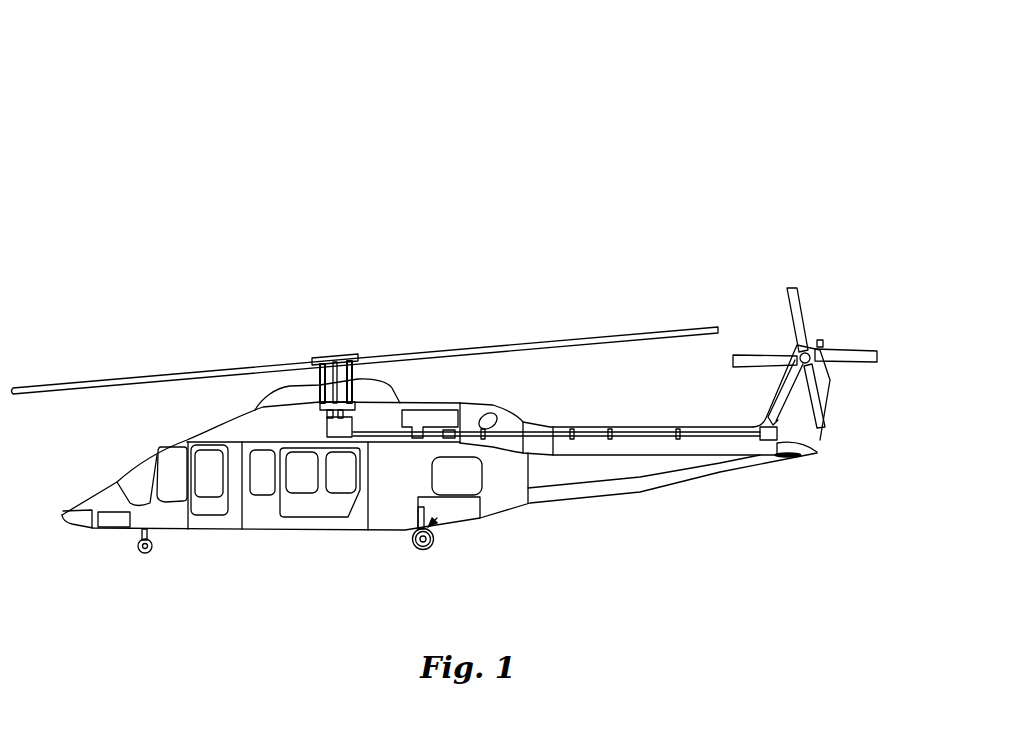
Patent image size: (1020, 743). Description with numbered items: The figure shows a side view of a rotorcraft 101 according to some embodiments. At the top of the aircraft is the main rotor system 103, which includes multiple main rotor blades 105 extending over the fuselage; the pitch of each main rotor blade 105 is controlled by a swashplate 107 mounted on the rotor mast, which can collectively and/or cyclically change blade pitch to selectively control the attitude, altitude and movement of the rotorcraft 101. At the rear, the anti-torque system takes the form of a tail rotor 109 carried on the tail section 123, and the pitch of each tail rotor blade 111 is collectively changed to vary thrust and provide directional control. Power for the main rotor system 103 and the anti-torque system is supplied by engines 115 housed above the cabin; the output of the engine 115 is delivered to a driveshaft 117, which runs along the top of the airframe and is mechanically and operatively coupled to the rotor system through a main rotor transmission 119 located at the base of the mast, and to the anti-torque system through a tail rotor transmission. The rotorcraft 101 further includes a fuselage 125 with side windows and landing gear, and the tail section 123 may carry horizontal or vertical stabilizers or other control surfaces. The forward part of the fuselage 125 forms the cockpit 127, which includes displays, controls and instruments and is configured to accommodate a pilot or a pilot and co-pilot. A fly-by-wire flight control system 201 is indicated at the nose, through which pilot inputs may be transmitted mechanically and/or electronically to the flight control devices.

The rotorcraft 101 is at (238, 97).
The main rotor system 103 is at (351, 337).
The main rotor blades 105 is at (603, 337).
The swashplate 107 is at (353, 402).
The tail rotor 109 is at (810, 272).
The tail rotor blades 111 is at (865, 347).
The engines 115 is at (443, 408).
The driveshaft 117 is at (378, 438).
The main rotor transmission 119 is at (327, 430).
The tail section 123 is at (650, 487).
The fuselage 125 is at (285, 528).
The cockpit 127 is at (122, 473).
The fly-by-wire flight control system 201 is at (97, 527).